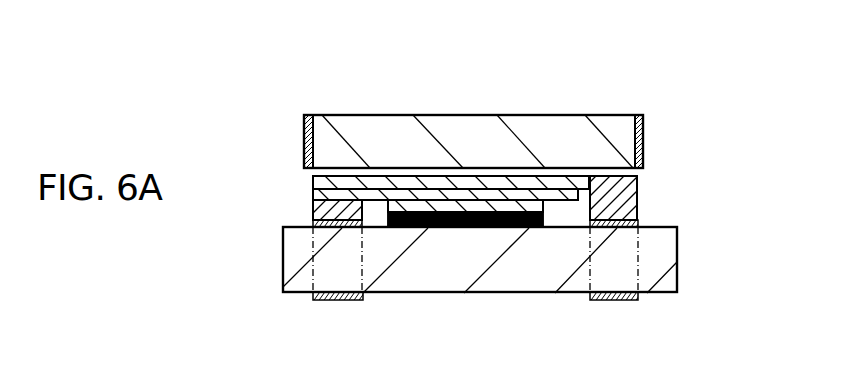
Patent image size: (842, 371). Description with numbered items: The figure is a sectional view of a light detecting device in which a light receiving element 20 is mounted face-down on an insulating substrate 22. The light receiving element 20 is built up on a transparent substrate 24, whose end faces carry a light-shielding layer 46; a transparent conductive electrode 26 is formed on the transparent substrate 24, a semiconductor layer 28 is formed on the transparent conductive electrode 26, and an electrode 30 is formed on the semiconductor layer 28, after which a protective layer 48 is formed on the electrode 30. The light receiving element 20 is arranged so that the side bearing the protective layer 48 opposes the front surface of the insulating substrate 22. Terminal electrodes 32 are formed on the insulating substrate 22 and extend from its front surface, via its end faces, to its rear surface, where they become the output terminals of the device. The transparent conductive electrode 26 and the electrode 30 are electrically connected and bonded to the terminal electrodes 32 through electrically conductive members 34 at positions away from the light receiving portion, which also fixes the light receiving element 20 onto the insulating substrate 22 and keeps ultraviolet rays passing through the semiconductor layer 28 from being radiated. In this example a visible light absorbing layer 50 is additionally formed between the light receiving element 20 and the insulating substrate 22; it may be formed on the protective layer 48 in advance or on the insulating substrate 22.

The light receiving element 20 is at (568, 98).
The insulating substrate 22 is at (521, 293).
The transparent substrate 24 is at (357, 128).
The transparent conductive electrode 26 is at (434, 174).
The semiconductor layer 28 is at (312, 186).
The electrode 30 is at (483, 197).
The terminal electrodes 32 is at (336, 230).
The electrically conductive members 34 is at (312, 210).
The light-shielding layer 46 is at (303, 135).
The protective layer 48 is at (453, 220).
The visible light absorbing layer 50 is at (475, 226).